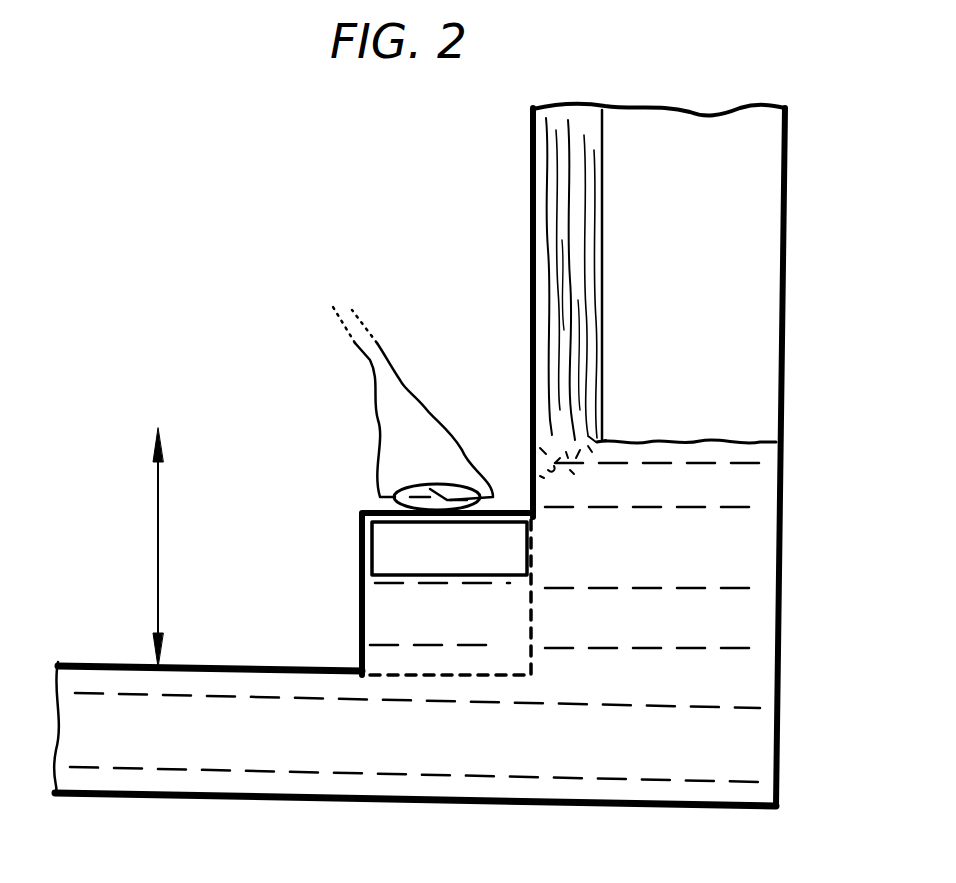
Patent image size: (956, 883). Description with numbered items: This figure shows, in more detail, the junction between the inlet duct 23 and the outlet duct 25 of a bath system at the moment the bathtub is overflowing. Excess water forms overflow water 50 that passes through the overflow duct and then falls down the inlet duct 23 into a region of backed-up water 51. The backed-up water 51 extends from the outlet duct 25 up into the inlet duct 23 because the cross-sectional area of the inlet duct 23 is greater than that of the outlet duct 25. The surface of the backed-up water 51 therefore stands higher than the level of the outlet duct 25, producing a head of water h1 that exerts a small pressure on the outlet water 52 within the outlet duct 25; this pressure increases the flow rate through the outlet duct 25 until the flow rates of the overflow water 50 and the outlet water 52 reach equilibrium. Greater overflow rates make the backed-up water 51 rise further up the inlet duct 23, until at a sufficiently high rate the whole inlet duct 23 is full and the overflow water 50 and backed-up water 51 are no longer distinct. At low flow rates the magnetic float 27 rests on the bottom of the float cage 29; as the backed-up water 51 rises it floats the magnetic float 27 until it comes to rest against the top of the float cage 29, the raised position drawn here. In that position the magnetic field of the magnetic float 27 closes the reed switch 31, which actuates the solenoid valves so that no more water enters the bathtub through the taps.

The inlet duct 23 is at (787, 233).
The overflow water 50 is at (577, 208).
The backed-up water 51 is at (737, 590).
The float cage 29 is at (358, 597).
The magnetic float 27 is at (626, 527).
The outlet duct 25 is at (185, 797).
The outlet water 52 is at (317, 753).
The reed switch 31 is at (423, 485).
The head of water h1 is at (178, 547).